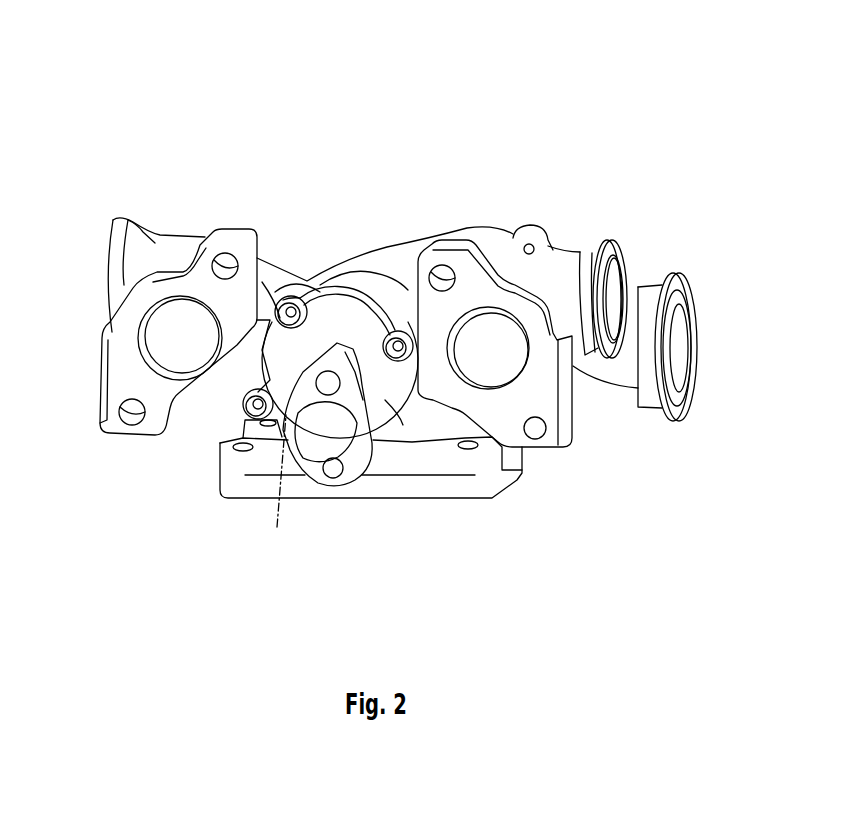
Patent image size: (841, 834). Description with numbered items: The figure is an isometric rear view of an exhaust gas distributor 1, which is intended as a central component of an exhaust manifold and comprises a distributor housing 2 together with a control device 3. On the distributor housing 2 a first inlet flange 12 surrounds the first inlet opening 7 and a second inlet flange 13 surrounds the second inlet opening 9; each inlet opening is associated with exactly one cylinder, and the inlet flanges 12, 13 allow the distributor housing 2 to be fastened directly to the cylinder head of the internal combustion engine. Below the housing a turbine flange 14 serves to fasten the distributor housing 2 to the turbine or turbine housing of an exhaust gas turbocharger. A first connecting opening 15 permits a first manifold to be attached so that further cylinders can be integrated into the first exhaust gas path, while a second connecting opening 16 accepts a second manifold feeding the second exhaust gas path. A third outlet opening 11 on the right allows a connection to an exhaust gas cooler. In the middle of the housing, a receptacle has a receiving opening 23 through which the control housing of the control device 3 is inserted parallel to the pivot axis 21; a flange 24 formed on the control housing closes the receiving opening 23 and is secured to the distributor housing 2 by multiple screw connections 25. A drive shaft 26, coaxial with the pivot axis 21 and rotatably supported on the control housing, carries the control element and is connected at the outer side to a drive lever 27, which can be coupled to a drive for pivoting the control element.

The exhaust gas distributor 1 is at (641, 150).
The distributor housing 2 is at (452, 222).
The control device 3 is at (321, 290).
The first inlet opening 7 is at (495, 357).
The second inlet opening 9 is at (187, 346).
The third outlet opening 11 is at (678, 347).
The first inlet flange 12 is at (553, 398).
The second inlet flange 13 is at (117, 370).
The turbine flange 14 is at (267, 487).
The first connecting opening 15 is at (615, 292).
The second connecting opening 16 is at (106, 266).
The pivot axis 21 is at (276, 487).
The receiving opening 23 is at (340, 283).
The flange 24 is at (398, 400).
The screw connections 25 is at (286, 299).
The drive shaft 26 is at (336, 462).
The drive lever 27 is at (308, 460).